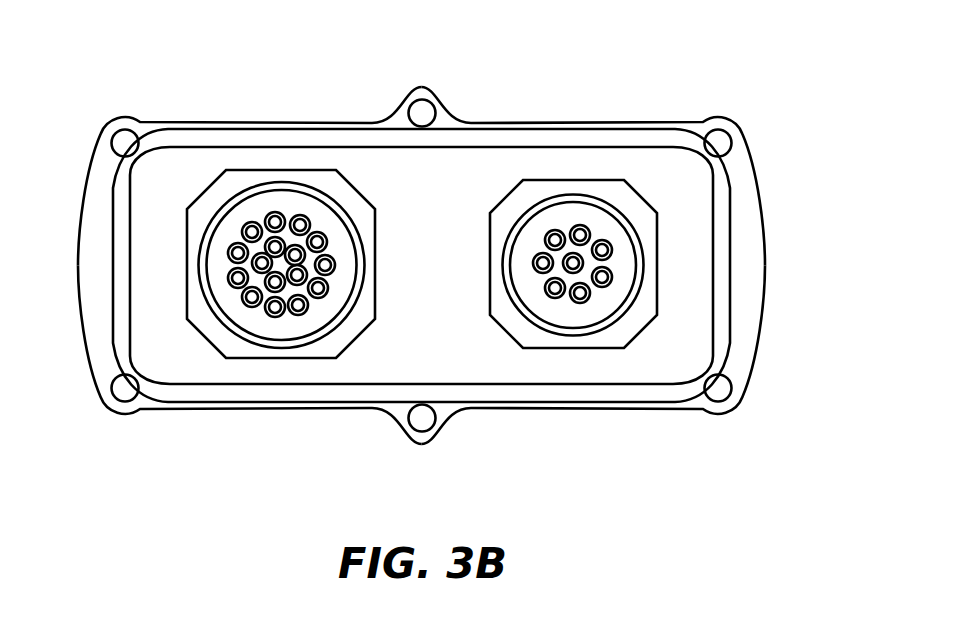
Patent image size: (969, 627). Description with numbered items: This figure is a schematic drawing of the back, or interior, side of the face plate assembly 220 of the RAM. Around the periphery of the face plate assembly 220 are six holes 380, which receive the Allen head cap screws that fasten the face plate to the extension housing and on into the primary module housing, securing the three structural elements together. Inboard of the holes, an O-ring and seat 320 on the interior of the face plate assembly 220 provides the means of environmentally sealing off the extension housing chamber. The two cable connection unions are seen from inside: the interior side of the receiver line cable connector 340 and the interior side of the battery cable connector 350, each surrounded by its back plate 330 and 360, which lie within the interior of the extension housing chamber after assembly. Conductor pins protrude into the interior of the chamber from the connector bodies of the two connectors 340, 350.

The face plate assembly 220 is at (448, 346).
The O-ring and seat 320 is at (727, 215).
The back plate 330 is at (227, 345).
The receiver line cable connector 340 is at (278, 187).
The battery cable connector 350 is at (573, 197).
The back plate 360 is at (632, 327).
The holes 380 is at (729, 133).